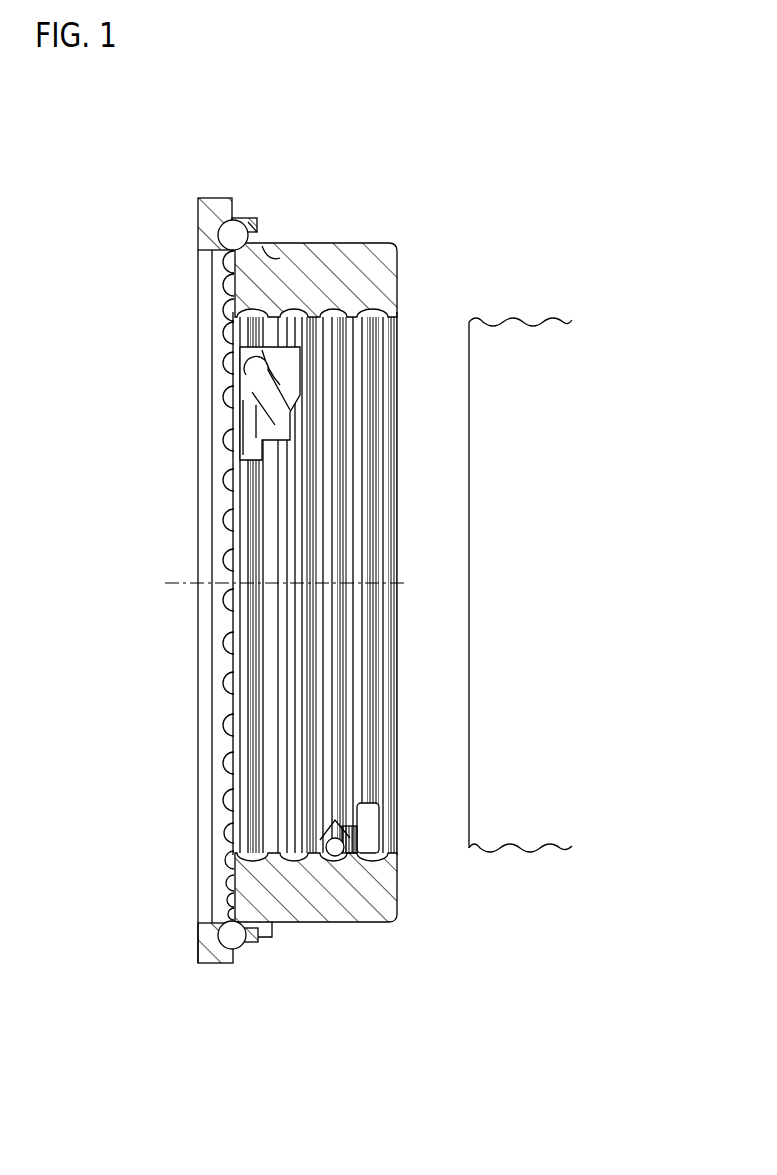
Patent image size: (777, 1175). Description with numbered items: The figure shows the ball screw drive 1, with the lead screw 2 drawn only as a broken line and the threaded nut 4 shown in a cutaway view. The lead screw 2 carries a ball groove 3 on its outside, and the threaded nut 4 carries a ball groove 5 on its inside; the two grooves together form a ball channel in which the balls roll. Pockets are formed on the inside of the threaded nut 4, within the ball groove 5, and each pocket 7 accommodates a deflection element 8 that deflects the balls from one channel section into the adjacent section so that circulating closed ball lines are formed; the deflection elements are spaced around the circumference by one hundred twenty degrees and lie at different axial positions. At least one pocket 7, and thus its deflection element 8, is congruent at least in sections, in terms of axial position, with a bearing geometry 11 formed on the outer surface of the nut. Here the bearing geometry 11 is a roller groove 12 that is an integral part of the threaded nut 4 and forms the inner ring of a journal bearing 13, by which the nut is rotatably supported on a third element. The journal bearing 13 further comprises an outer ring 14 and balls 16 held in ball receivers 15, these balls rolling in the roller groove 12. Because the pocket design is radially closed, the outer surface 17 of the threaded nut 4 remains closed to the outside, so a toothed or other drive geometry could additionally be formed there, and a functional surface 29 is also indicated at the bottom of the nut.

The ball screw drive 1 is at (540, 213).
The lead screw 2 is at (570, 320).
The ball groove 3 is at (545, 325).
The threaded nut 4 is at (338, 252).
The ball groove 5 is at (380, 305).
The pocket 7 is at (229, 352).
The deflection element 8 is at (247, 378).
The bearing geometry 11 is at (268, 257).
The roller groove 12 is at (259, 242).
The journal bearing 13 is at (184, 182).
The outer ring 14 is at (218, 208).
The ball receiver 15 is at (231, 611).
The ball 16 is at (234, 230).
The outer surface 17 is at (351, 958).
The functional surface 29 is at (307, 922).